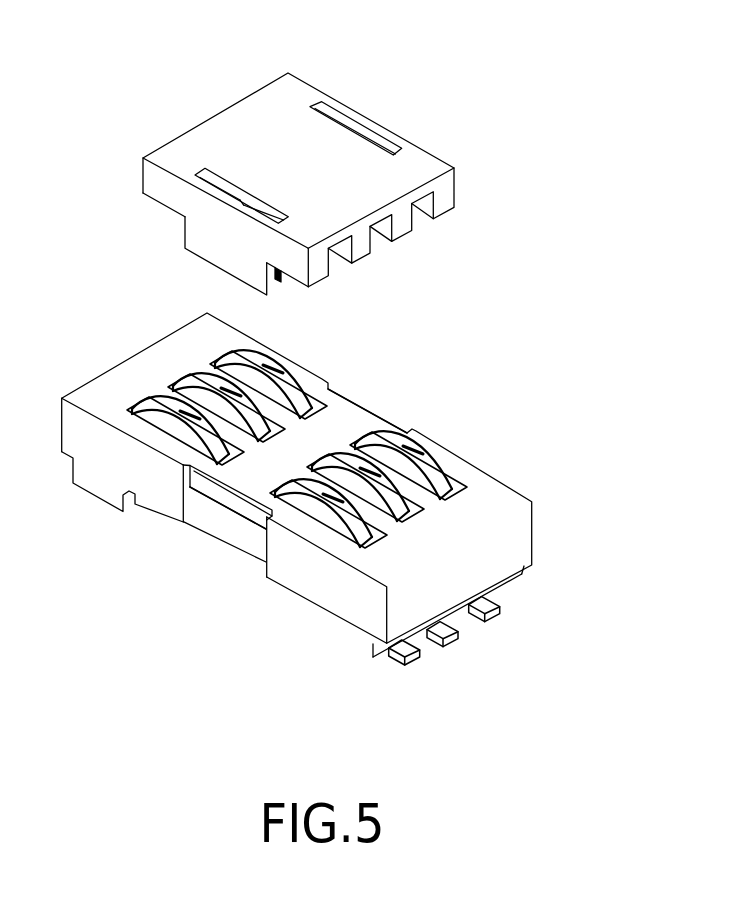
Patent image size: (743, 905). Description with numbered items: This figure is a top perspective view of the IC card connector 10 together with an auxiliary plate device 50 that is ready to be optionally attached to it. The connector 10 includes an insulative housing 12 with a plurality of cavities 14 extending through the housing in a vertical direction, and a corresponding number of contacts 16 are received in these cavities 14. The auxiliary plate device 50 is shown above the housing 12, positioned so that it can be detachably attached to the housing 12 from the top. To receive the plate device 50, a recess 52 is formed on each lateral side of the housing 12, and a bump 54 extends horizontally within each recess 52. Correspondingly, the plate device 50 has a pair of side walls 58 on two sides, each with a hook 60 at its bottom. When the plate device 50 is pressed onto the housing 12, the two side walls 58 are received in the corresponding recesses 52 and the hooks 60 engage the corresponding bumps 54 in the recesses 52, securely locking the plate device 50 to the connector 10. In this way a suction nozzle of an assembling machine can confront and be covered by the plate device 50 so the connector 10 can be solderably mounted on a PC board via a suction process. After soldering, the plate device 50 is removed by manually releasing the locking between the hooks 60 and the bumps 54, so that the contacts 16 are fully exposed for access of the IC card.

The IC card connector 10 is at (393, 354).
The insulative housing 12 is at (354, 489).
The cavities 14 is at (386, 507).
The contacts 16 is at (437, 474).
The auxiliary plate device 50 is at (323, 191).
The recess 52 is at (363, 407).
The bump 54 is at (220, 497).
The side walls 58 is at (213, 243).
The hook 60 is at (274, 268).